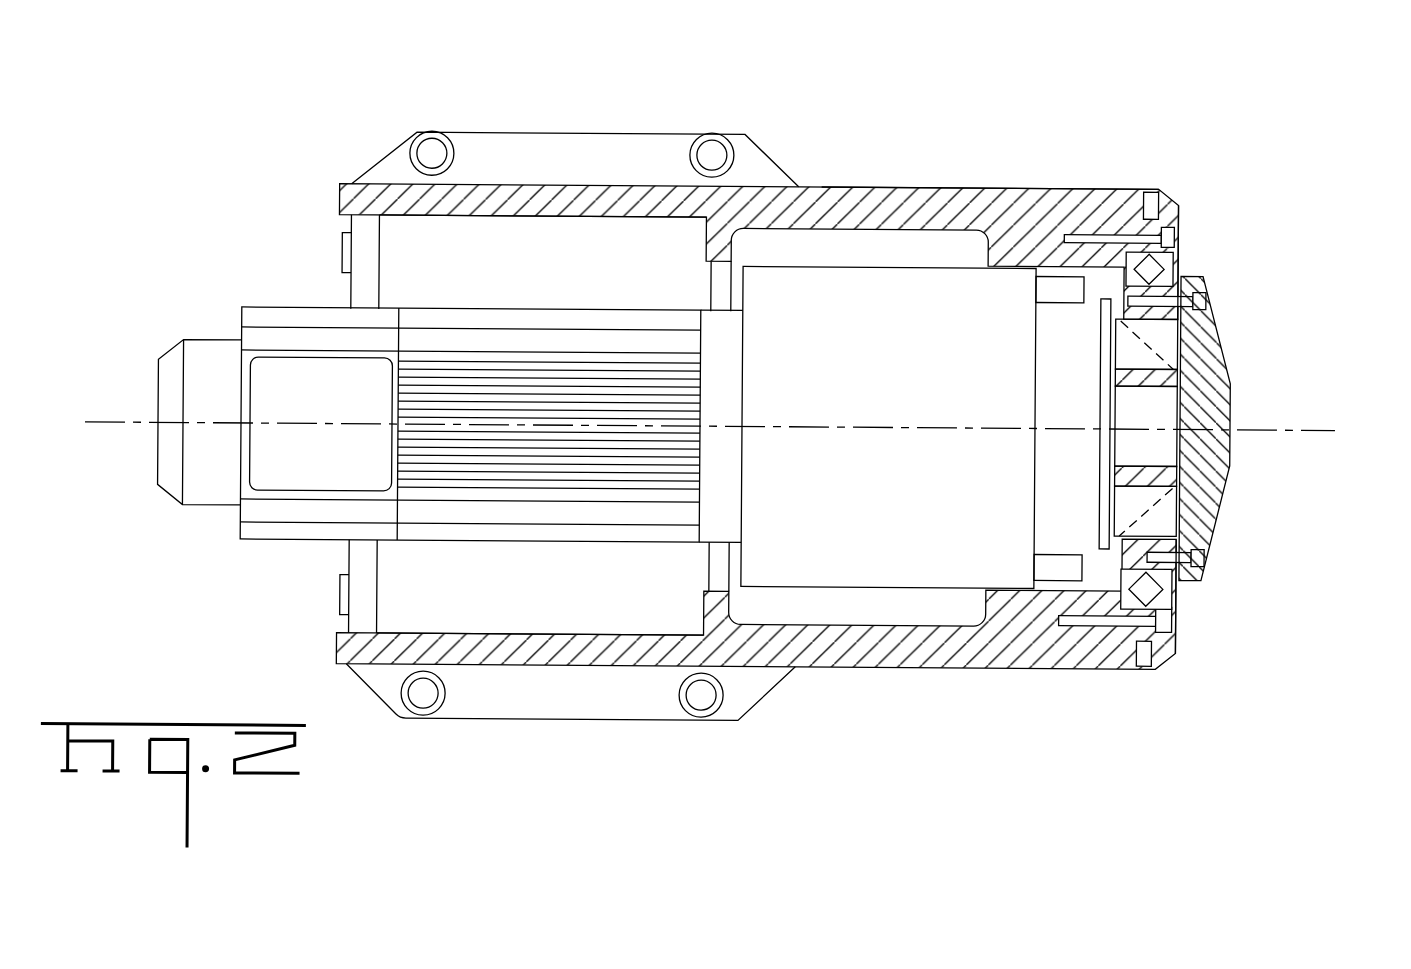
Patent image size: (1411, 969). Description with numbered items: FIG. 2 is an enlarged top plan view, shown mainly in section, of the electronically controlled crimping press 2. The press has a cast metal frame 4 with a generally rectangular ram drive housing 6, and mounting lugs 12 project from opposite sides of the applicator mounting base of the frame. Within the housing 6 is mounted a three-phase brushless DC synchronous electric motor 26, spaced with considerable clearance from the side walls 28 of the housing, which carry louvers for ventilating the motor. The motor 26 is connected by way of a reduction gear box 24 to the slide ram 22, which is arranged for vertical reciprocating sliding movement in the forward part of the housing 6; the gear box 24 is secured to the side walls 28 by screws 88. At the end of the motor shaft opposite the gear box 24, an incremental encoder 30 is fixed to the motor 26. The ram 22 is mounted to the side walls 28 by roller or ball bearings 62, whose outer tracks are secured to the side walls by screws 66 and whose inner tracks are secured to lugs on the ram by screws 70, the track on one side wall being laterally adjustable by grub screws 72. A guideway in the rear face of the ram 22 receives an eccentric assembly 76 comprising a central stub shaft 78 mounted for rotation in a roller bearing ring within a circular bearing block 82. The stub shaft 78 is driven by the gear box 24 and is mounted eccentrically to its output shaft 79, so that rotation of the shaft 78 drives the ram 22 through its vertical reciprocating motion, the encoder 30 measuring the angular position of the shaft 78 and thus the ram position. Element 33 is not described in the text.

The crimping press 2 is at (880, 145).
The cast metal frame 4 is at (345, 175).
The ram drive housing 6 is at (990, 184).
The mounting lugs 12 is at (553, 149).
The slide ram 22 is at (1232, 344).
The reduction gear box 24 is at (853, 398).
The electric motor 26 is at (535, 303).
The side walls 28 is at (515, 208).
The incremental encoder 30 is at (200, 463).
The bracket 33 is at (362, 561).
The bearings 62 is at (1197, 257).
The screws 66 is at (1178, 229).
The screws 70 is at (1207, 292).
The grub screws 72 is at (1155, 185).
The eccentric assembly 76 is at (1200, 513).
The stub shaft 78 is at (1163, 432).
The output shaft 79 is at (1090, 371).
The bearing block 82 is at (1183, 389).
The screws 88 is at (1040, 281).